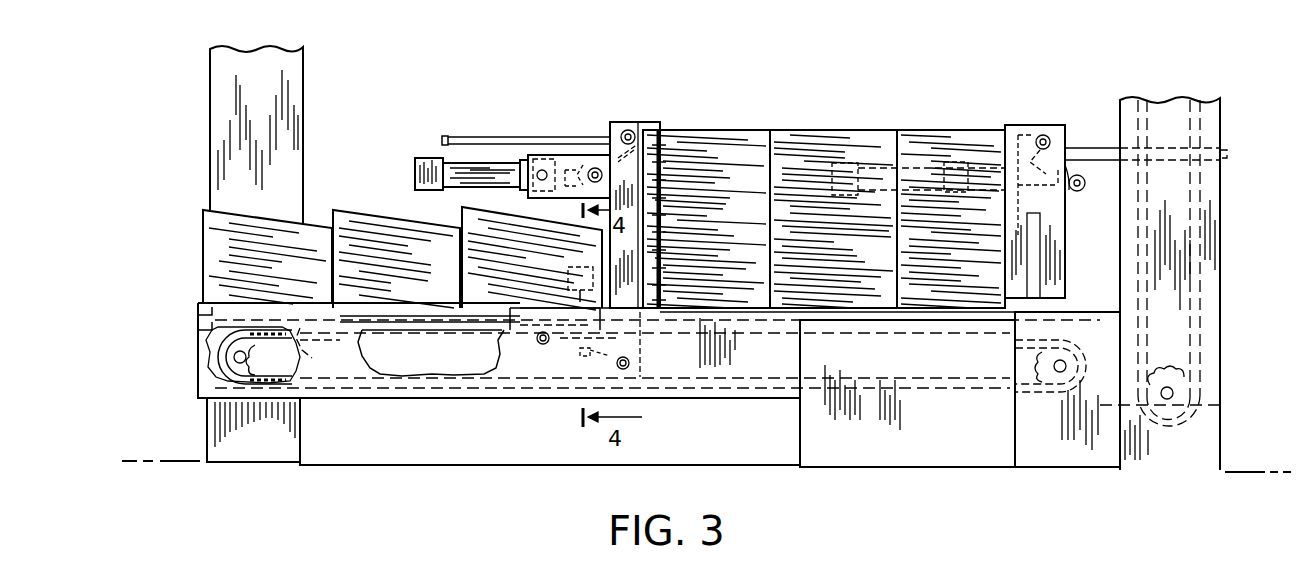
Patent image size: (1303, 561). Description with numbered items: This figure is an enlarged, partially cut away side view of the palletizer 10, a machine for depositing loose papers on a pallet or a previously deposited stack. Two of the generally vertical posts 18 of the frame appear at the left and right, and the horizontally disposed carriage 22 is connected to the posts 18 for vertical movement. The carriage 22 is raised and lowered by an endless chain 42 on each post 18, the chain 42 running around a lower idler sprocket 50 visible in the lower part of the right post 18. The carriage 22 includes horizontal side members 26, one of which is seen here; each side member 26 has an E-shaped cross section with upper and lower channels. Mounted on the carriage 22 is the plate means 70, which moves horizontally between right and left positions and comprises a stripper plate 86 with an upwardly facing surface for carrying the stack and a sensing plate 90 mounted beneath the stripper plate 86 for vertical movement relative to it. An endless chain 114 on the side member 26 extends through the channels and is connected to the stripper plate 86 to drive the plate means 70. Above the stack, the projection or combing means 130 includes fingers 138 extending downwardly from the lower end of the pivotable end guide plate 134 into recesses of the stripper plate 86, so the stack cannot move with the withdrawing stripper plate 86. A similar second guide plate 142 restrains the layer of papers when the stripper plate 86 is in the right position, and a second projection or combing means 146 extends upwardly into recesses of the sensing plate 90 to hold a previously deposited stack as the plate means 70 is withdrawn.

The palletizer 10 is at (183, 70).
The post 18 is at (217, 127).
The carriage 22 is at (1097, 322).
The side member 26 is at (778, 395).
The endless chain 42 is at (1197, 196).
The lower idler sprocket 50 is at (1210, 395).
The plate means 70 is at (474, 341).
The stripper plate 86 is at (493, 307).
The sensing plate 90 is at (417, 328).
The endless chain 114 is at (333, 388).
The projection or combing means 130 is at (420, 140).
The end guide member or plate 134 is at (538, 136).
The finger 138 is at (448, 136).
The second guide member or plate 142 is at (1092, 148).
The second projection or combing means 146 is at (583, 364).